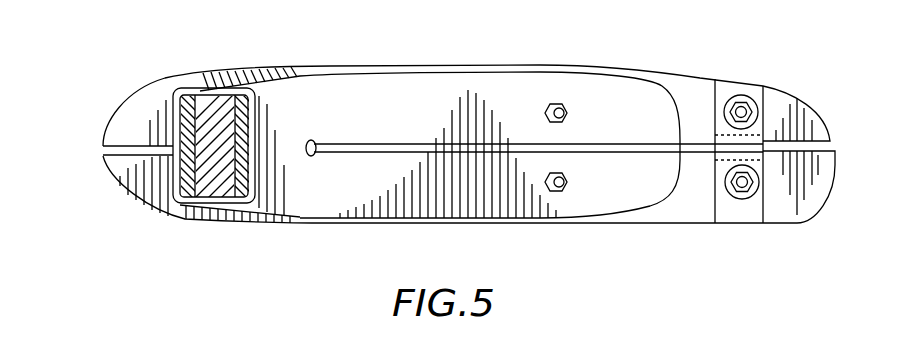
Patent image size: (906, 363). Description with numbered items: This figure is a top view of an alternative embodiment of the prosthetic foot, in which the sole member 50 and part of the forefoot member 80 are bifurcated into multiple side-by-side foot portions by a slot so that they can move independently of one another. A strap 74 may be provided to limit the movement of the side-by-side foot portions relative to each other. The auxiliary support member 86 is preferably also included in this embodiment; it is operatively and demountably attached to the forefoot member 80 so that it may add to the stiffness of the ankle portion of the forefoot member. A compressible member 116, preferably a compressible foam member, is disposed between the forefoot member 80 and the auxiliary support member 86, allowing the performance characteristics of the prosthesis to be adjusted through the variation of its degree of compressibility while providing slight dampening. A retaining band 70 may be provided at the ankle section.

The sole member 50 is at (101, 148).
The compressible member 116 is at (223, 88).
The forefoot member 80 is at (190, 210).
The retaining band 70 is at (220, 207).
The auxiliary support member 86 is at (265, 210).
The strap 74 is at (720, 198).